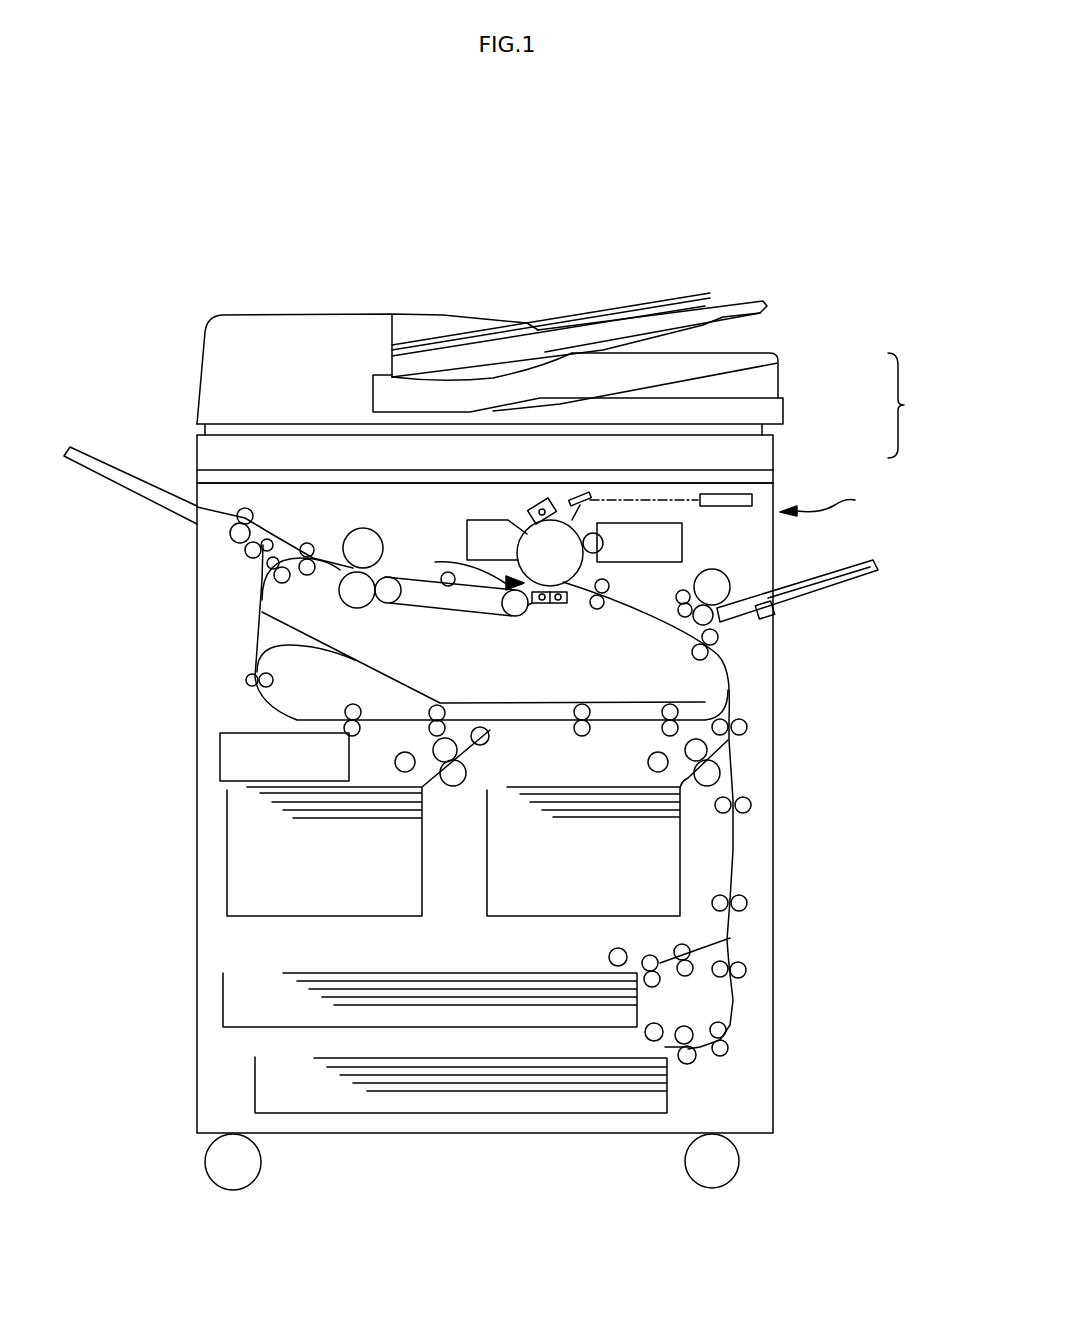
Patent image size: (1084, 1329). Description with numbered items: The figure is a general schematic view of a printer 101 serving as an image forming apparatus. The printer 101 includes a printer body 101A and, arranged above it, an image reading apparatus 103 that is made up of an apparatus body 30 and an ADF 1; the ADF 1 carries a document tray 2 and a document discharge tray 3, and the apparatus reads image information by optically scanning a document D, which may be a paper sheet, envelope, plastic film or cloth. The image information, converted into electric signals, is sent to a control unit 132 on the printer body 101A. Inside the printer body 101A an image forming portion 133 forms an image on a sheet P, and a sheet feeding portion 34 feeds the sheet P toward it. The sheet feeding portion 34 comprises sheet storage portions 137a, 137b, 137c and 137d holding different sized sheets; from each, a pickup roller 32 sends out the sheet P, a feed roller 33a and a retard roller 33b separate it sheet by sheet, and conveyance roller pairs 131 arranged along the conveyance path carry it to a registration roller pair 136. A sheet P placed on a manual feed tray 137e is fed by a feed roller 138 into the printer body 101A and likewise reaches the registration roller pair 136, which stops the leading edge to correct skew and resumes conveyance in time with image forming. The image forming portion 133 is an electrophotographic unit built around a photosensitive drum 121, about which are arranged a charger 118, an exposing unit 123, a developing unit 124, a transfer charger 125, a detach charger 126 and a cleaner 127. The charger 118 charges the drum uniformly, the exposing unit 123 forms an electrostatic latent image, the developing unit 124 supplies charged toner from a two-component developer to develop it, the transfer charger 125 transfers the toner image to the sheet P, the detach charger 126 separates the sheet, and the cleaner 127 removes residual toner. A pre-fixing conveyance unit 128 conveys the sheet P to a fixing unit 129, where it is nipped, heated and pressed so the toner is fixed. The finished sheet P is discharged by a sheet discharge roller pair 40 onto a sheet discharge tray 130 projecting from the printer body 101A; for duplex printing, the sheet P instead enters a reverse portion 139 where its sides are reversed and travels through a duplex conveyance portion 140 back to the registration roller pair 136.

The printer 101 is at (441, 216).
The printer body 101A is at (845, 502).
The image reading apparatus 103 is at (920, 405).
The ADF 1 is at (806, 371).
The document tray 2 is at (748, 298).
The document discharge tray 3 is at (753, 352).
The document D is at (670, 298).
The apparatus body 30 is at (803, 444).
The charger 118 is at (547, 490).
The photosensitive drum 121 is at (527, 523).
The exposing unit 123 is at (753, 503).
The developing unit 124 is at (668, 543).
The transfer charger 125 is at (565, 605).
The detach charger 126 is at (540, 605).
The cleaner 127 is at (465, 540).
The pre-fixing conveyance unit 128 is at (458, 605).
The fixing unit 129 is at (355, 543).
The sheet discharge tray 130 is at (90, 470).
The conveyance roller pair 131 is at (745, 727).
The control unit 132 is at (220, 755).
The image forming portion 133 is at (456, 570).
The registration roller pair 136 is at (615, 610).
The sheet storage portion 137a is at (255, 1087).
The sheet storage portion 137b is at (223, 1003).
The sheet storage portion 137c is at (227, 860).
The sheet storage portion 137d is at (680, 858).
The manual feed tray 137e is at (850, 585).
The feed roller 138 is at (717, 583).
The reverse portion 139 is at (355, 652).
The duplex conveyance portion 140 is at (237, 699).
The sheet discharge roller pair 40 is at (233, 545).
The sheet feeding portion 34 is at (748, 698).
The pickup roller 32 is at (395, 762).
The feed roller 33a is at (437, 750).
The retard roller 33b is at (458, 790).
The sheet P is at (553, 785).